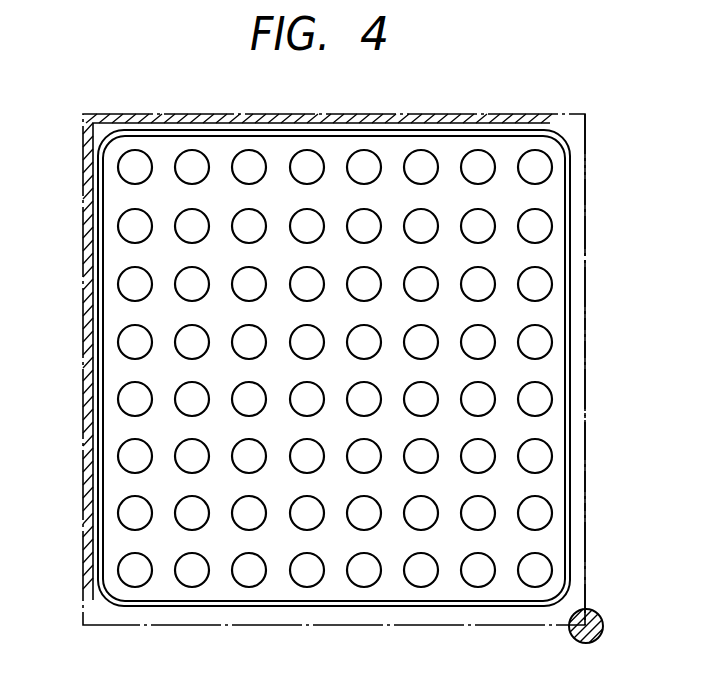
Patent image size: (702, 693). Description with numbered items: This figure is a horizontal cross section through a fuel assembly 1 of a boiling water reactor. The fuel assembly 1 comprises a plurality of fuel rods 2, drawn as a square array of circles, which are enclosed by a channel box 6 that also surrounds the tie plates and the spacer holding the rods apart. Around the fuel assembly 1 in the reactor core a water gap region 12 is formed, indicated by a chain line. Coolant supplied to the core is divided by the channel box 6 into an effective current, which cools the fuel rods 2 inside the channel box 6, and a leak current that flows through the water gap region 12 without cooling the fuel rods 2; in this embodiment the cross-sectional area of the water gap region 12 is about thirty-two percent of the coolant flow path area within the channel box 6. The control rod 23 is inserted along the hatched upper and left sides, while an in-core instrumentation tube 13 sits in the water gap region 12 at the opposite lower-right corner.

The fuel assembly 1 is at (84, 201).
The fuel rods 2 is at (552, 343).
The channel box 6 is at (331, 133).
The water gap region 12 is at (578, 176).
The in-core instrumentation tube 13 is at (600, 610).
The control rod 23 is at (178, 121).